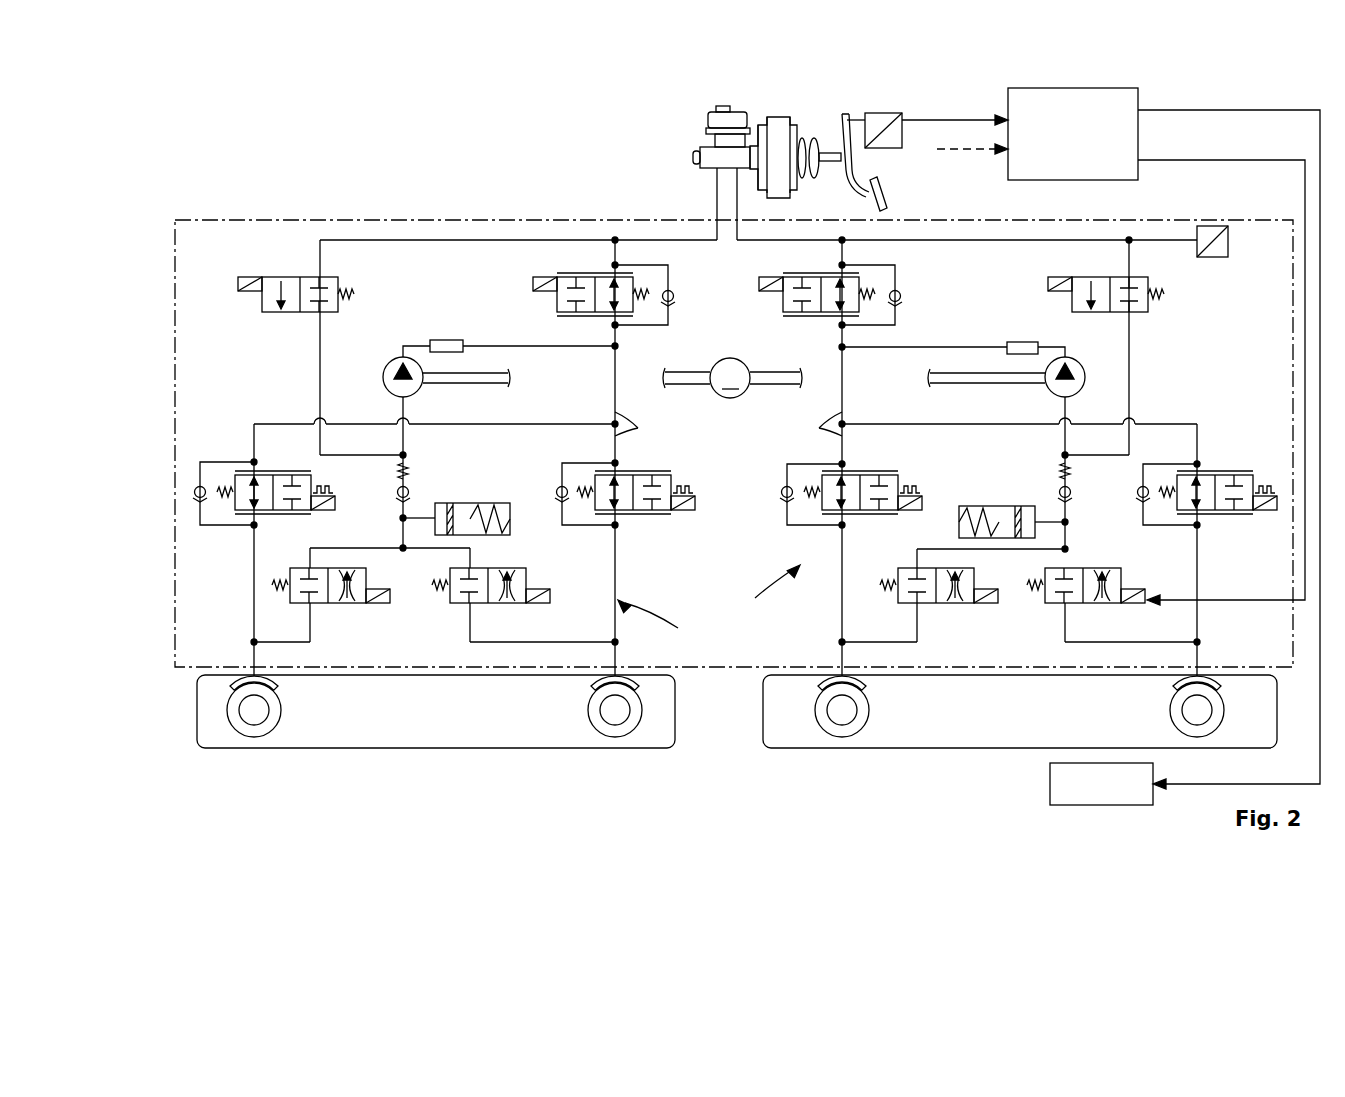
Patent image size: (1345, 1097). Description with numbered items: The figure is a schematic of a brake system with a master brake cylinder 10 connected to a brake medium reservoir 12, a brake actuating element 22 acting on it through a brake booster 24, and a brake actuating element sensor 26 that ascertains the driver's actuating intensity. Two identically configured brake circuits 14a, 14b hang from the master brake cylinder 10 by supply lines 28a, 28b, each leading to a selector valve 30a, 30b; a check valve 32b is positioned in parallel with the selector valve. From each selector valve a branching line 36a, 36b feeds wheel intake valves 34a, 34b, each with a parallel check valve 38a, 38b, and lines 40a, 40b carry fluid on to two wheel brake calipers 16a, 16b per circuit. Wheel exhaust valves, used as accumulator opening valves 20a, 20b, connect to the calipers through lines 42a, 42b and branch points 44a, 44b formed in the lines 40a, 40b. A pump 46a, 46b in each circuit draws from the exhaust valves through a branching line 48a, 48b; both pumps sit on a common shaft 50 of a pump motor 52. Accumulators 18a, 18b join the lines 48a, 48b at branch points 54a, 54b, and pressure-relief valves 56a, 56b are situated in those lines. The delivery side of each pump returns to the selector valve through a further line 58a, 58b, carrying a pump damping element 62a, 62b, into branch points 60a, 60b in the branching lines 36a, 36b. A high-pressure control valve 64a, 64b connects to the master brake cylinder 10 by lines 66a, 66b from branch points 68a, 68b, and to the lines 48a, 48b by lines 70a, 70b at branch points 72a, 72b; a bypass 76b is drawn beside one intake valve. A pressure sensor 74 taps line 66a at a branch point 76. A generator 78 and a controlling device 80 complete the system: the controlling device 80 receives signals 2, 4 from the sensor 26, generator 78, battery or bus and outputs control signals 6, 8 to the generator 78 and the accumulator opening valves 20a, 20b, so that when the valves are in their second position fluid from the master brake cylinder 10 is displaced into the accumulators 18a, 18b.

The signal 2 is at (942, 118).
The signal 4 is at (952, 151).
The control signal 6 is at (1255, 110).
The control signal 8 is at (1235, 162).
The master brake cylinder 10 is at (700, 160).
The brake medium reservoir 12 is at (706, 118).
The brake circuit 14a is at (758, 586).
The brake circuit 14b is at (669, 619).
The wheel brake caliper 16a is at (855, 690).
The wheel brake caliper 16b is at (268, 690).
The accumulator 18a is at (972, 506).
The accumulator 18b is at (498, 502).
The accumulator opening valve 20a is at (942, 607).
The accumulator opening valve 20b is at (450, 580).
The brake actuating element 22 is at (862, 165).
The brake booster 24 is at (792, 190).
The brake actuating element sensor 26 is at (880, 112).
The supply line 28a is at (742, 242).
The supply line 28b is at (662, 238).
The selector valve 30a is at (800, 318).
The selector valve 30b is at (568, 318).
The check valve 32b is at (671, 303).
The wheel intake valve 34a is at (865, 515).
The wheel intake valve 34b is at (277, 515).
The branching line 36a is at (986, 427).
The branching line 36b is at (469, 427).
The check valve 38a is at (783, 490).
The check valve 38b is at (194, 493).
The line 40a is at (840, 602).
The line 40b is at (252, 602).
The line 42a is at (915, 622).
The line 42b is at (312, 622).
The branch point 44a is at (840, 642).
The branch point 44b is at (252, 642).
The pump 46a is at (1047, 390).
The pump 46b is at (392, 362).
The branching line 48a is at (1068, 445).
The branching line 48b is at (406, 444).
The common shaft 50 is at (1000, 386).
The pump motor 52 is at (722, 398).
The branch point 54a is at (1068, 522).
The branch point 54b is at (401, 519).
The pressure-relief valve 56a is at (1058, 490).
The pressure-relief valve 56b is at (410, 490).
The further line 58a is at (950, 346).
The further line 58b is at (496, 345).
The branch point 60a is at (844, 348).
The branch point 60b is at (617, 347).
The pump damping element 62a is at (1022, 340).
The pump damping element 62b is at (445, 340).
The high-pressure control valve 64a is at (1135, 316).
The high-pressure control valve 64b is at (340, 290).
The line 66a is at (970, 242).
The line 66b is at (417, 238).
The branch point 68a is at (840, 241).
The branch point 68b is at (612, 241).
The line 70a is at (1131, 389).
The line 70b is at (318, 366).
The branch point 72a is at (1062, 457).
The branch point 72b is at (401, 456).
The pressure sensor 74 is at (1212, 259).
The branch point 76 is at (1127, 241).
The bypass line 76b is at (580, 526).
The generator 78 is at (1050, 784).
The controlling device 80 is at (1138, 95).